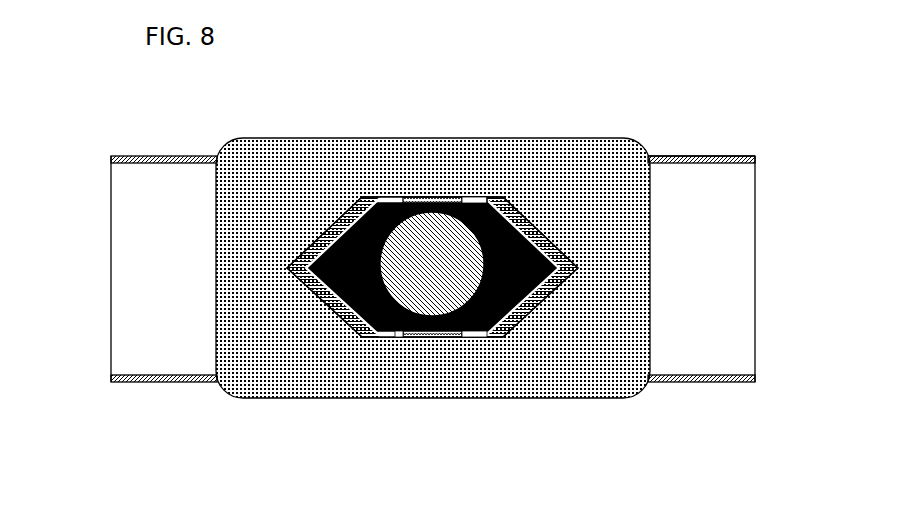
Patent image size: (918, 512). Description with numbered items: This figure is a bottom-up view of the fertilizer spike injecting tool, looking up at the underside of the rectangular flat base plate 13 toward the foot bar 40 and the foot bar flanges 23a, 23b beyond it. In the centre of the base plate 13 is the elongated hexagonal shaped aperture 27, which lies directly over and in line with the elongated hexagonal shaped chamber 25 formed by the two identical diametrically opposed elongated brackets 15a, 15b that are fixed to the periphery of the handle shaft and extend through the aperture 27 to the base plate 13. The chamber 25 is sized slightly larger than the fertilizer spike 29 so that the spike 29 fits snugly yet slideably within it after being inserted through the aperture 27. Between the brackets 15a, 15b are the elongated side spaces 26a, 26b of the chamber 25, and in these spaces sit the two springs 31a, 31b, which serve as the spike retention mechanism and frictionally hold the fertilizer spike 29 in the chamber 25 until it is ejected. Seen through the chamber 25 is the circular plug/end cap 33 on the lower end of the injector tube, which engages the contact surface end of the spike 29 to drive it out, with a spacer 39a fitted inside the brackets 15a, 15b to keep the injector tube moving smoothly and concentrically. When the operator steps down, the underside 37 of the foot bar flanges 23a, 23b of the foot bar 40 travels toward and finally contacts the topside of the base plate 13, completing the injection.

The base plate 13 is at (347, 136).
The elongated bracket 15a is at (335, 218).
The elongated bracket 15b is at (535, 222).
The foot bar flange 23a is at (106, 158).
The foot bar flange 23b is at (758, 158).
The elongated hexagonal shaped chamber 25 is at (348, 222).
The elongated side space 26a is at (484, 338).
The elongated side space 26b is at (473, 196).
The elongated hexagonal shaped aperture 27 is at (373, 340).
The fertilizer spike 29 is at (610, 379).
The spring 31a is at (438, 338).
The spring 31b is at (430, 197).
The plug/end cap 33 is at (393, 338).
The underside of the foot bar flanges 37 is at (697, 157).
The spacer 39a is at (487, 203).
The foot bar 40 is at (761, 268).